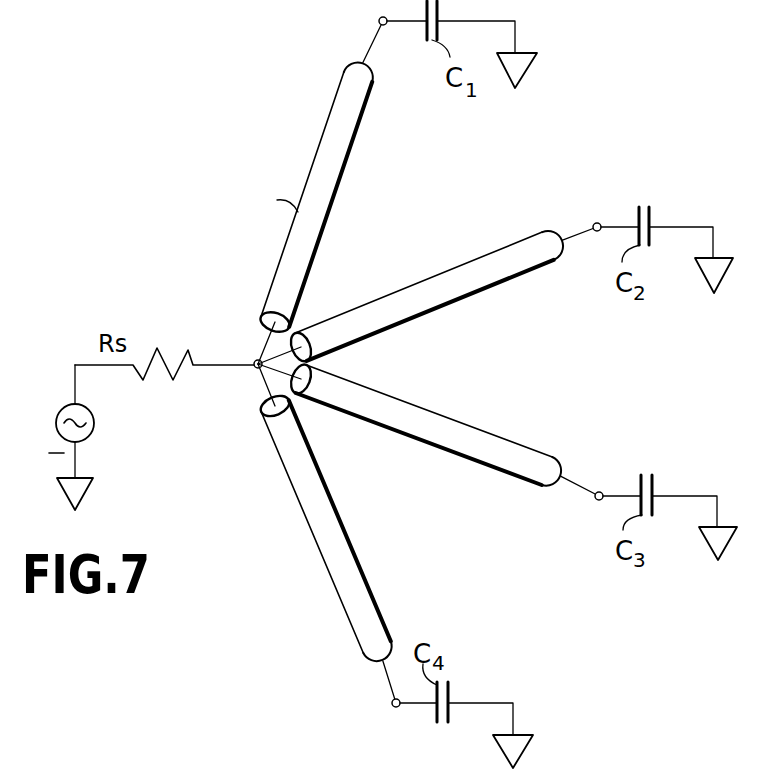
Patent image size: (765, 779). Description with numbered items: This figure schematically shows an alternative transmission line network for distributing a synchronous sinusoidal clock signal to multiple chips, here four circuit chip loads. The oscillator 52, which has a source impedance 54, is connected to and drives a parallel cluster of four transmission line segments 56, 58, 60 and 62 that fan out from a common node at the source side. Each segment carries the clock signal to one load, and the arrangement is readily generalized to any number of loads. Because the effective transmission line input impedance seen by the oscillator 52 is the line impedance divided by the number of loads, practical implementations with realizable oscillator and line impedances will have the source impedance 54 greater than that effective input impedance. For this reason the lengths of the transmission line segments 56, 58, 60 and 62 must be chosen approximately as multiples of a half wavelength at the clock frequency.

The oscillator 52 is at (94, 431).
The source impedance 54 is at (201, 336).
The transmission line segment 56 is at (332, 122).
The transmission line segment 58 is at (475, 258).
The transmission line segment 60 is at (422, 408).
The transmission line segment 62 is at (368, 583).